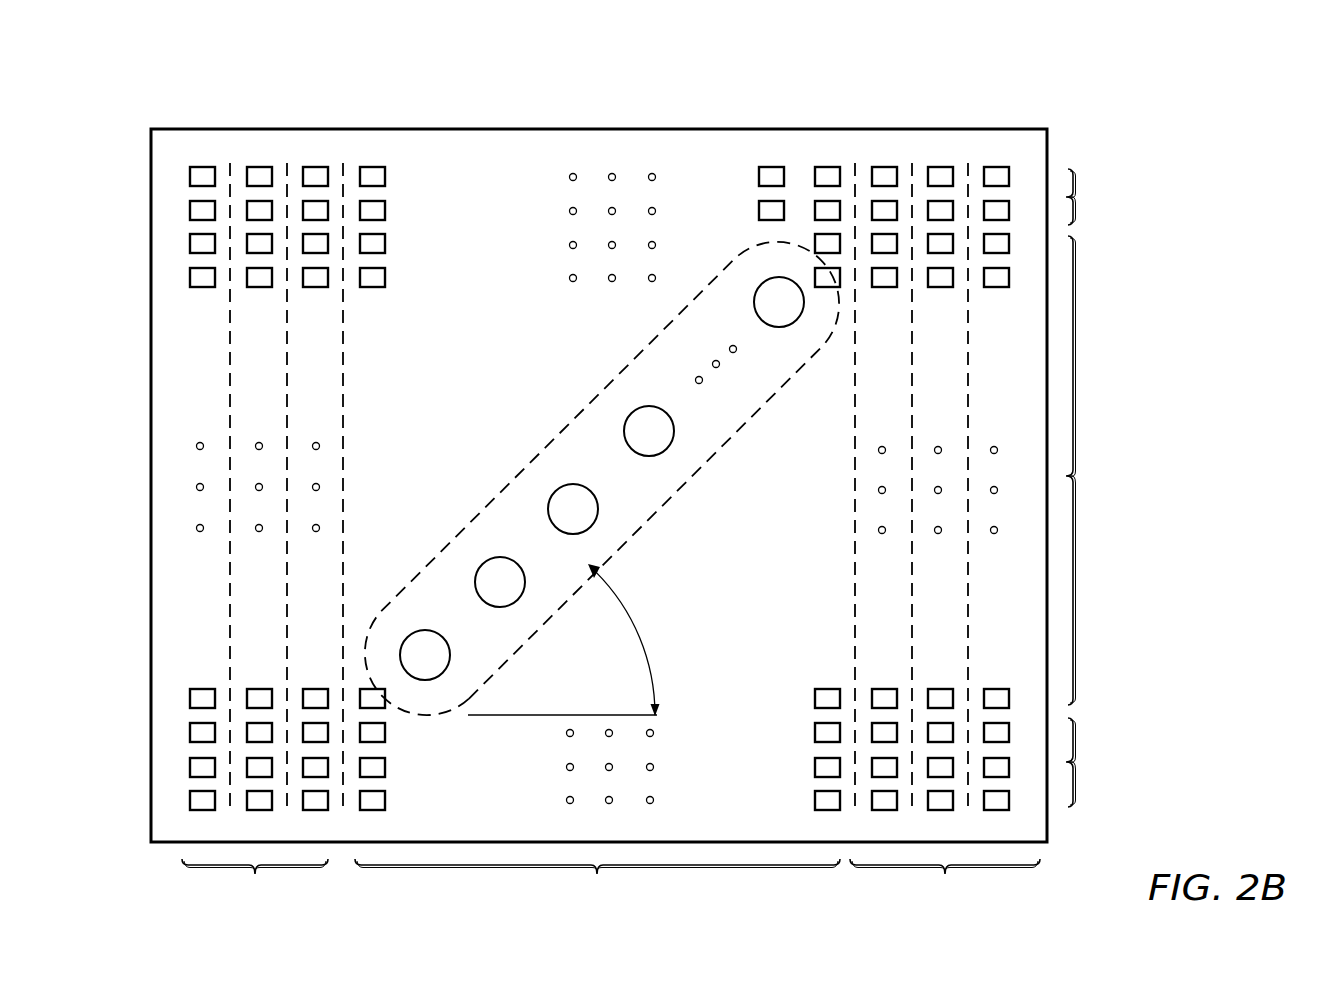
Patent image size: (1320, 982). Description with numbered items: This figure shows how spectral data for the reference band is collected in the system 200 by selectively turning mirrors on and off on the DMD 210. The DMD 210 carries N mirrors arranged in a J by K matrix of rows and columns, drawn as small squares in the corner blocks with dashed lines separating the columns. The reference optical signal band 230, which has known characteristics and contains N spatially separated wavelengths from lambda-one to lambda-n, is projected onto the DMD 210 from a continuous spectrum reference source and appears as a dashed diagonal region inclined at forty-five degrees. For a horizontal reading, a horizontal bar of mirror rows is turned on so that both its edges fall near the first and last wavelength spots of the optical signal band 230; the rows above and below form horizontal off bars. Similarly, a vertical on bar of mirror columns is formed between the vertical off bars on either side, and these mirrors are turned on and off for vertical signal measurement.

The system 200 is at (1155, 95).
The DMD 210 is at (602, 129).
The reference optical signal band 230 is at (650, 513).